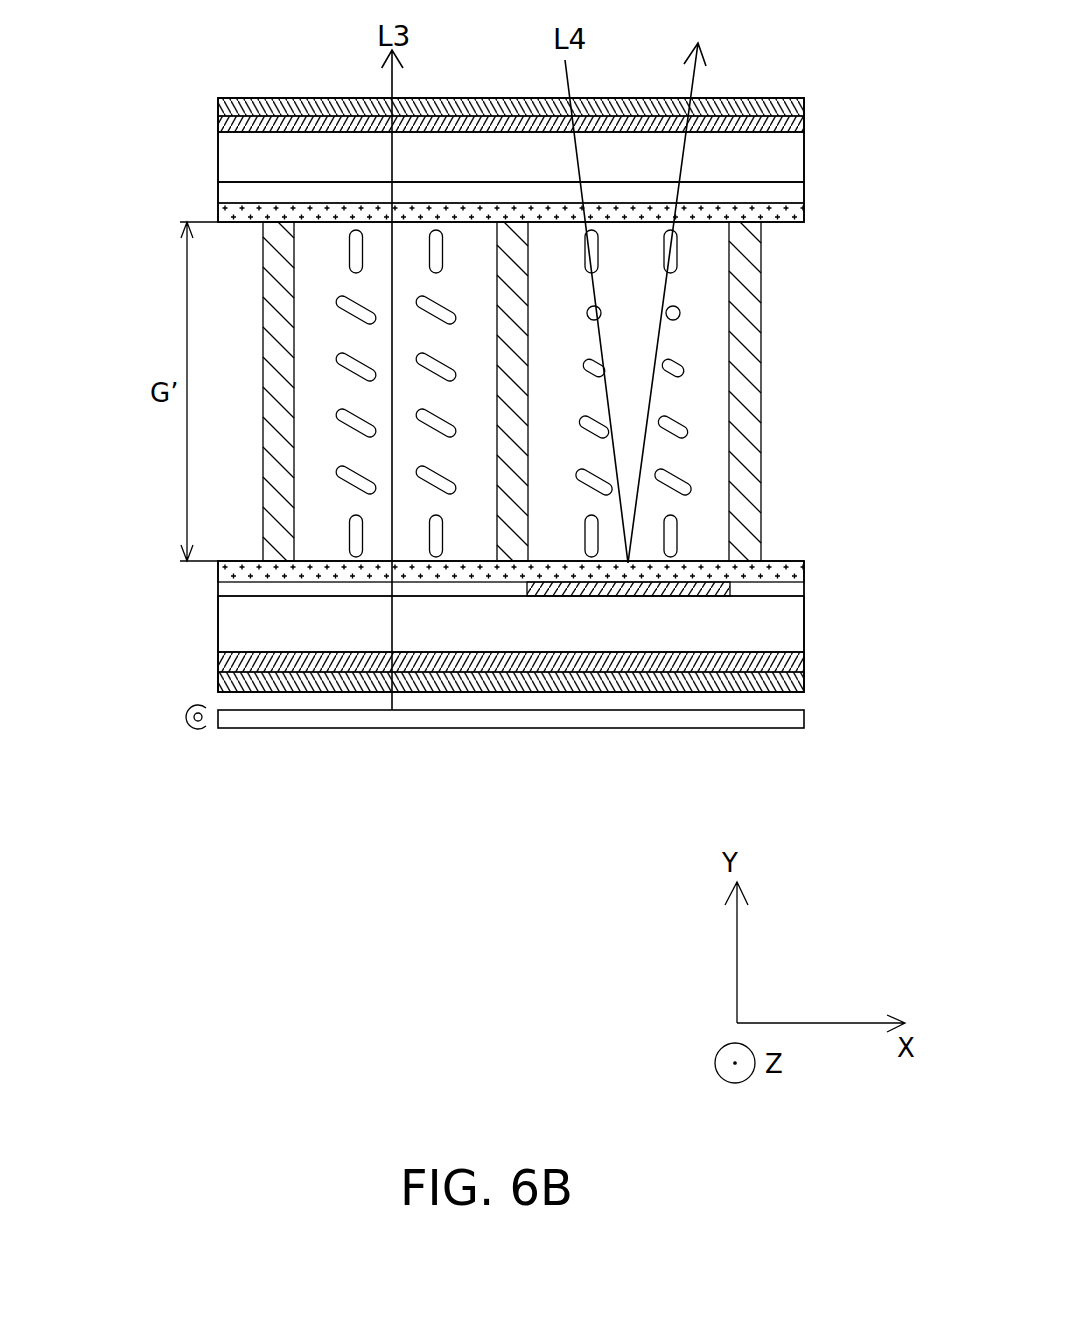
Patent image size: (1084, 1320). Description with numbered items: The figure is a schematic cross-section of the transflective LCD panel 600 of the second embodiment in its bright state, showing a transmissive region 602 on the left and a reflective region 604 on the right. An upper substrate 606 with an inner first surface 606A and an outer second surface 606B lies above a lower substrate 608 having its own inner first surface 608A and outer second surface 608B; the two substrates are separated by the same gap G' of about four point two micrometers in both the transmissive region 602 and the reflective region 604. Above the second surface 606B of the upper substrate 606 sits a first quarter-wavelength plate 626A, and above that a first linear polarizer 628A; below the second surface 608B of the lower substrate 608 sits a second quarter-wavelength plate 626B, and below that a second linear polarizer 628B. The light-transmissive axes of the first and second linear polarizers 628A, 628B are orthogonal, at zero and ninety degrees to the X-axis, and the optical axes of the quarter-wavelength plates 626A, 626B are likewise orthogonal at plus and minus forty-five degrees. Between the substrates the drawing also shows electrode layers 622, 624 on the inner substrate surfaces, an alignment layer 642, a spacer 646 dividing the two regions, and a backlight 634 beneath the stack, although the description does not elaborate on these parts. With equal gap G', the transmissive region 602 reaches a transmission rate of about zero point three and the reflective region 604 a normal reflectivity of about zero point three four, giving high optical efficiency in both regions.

The transflective LCD panel 600 is at (868, 57).
The transmissive region 602 is at (494, 755).
The reflective region 604 is at (732, 755).
The upper substrate 606 is at (775, 163).
The first surface of upper substrate 606A is at (760, 183).
The second surface of upper substrate 606B is at (763, 127).
The lower substrate 608 is at (777, 616).
The first surface of lower substrate 608A is at (785, 595).
The second surface of lower substrate 608B is at (802, 687).
The first electrode layer 622 is at (230, 195).
The second electrode layer 624 is at (227, 589).
The first quarter-wavelength plate 626A is at (218, 123).
The second quarter-wavelength plate 626B is at (227, 660).
The first linear polarizer 628A is at (220, 101).
The second linear polarizer 628B is at (227, 678).
The backlight module 634 is at (237, 717).
The alignment layer 642 is at (797, 213).
The spacer 646 is at (513, 240).